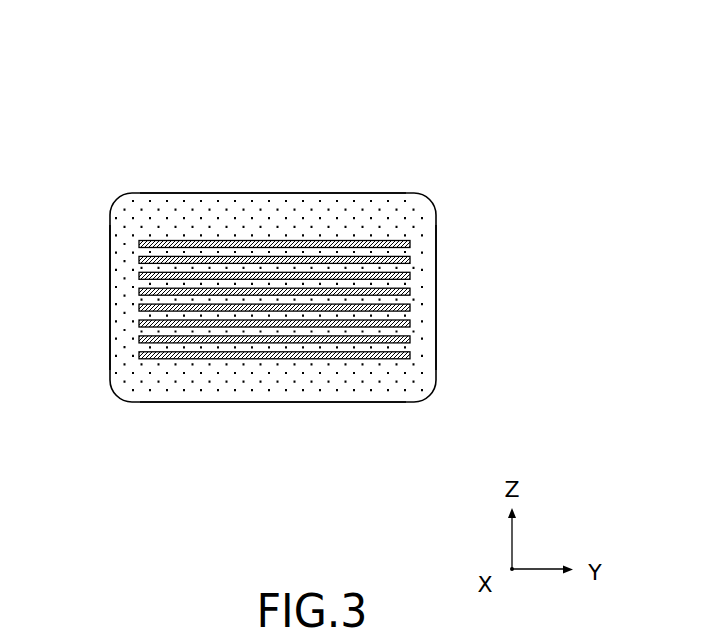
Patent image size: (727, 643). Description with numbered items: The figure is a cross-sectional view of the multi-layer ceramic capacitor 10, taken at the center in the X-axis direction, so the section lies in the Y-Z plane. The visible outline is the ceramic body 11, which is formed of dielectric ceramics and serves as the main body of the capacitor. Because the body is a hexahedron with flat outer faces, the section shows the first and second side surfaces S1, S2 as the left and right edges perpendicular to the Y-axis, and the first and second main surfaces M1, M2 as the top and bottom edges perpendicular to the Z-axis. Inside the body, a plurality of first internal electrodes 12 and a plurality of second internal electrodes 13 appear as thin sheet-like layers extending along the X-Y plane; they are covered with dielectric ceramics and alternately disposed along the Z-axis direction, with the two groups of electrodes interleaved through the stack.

The multi-layer ceramic capacitor 10 is at (117, 80).
The ceramic body 11 is at (257, 157).
The first internal electrodes 12 is at (161, 336).
The second internal electrodes 13 is at (332, 352).
The first main surface M1 is at (312, 193).
The second main surface M2 is at (298, 403).
The first side surface S1 is at (110, 305).
The second side surface S2 is at (437, 305).